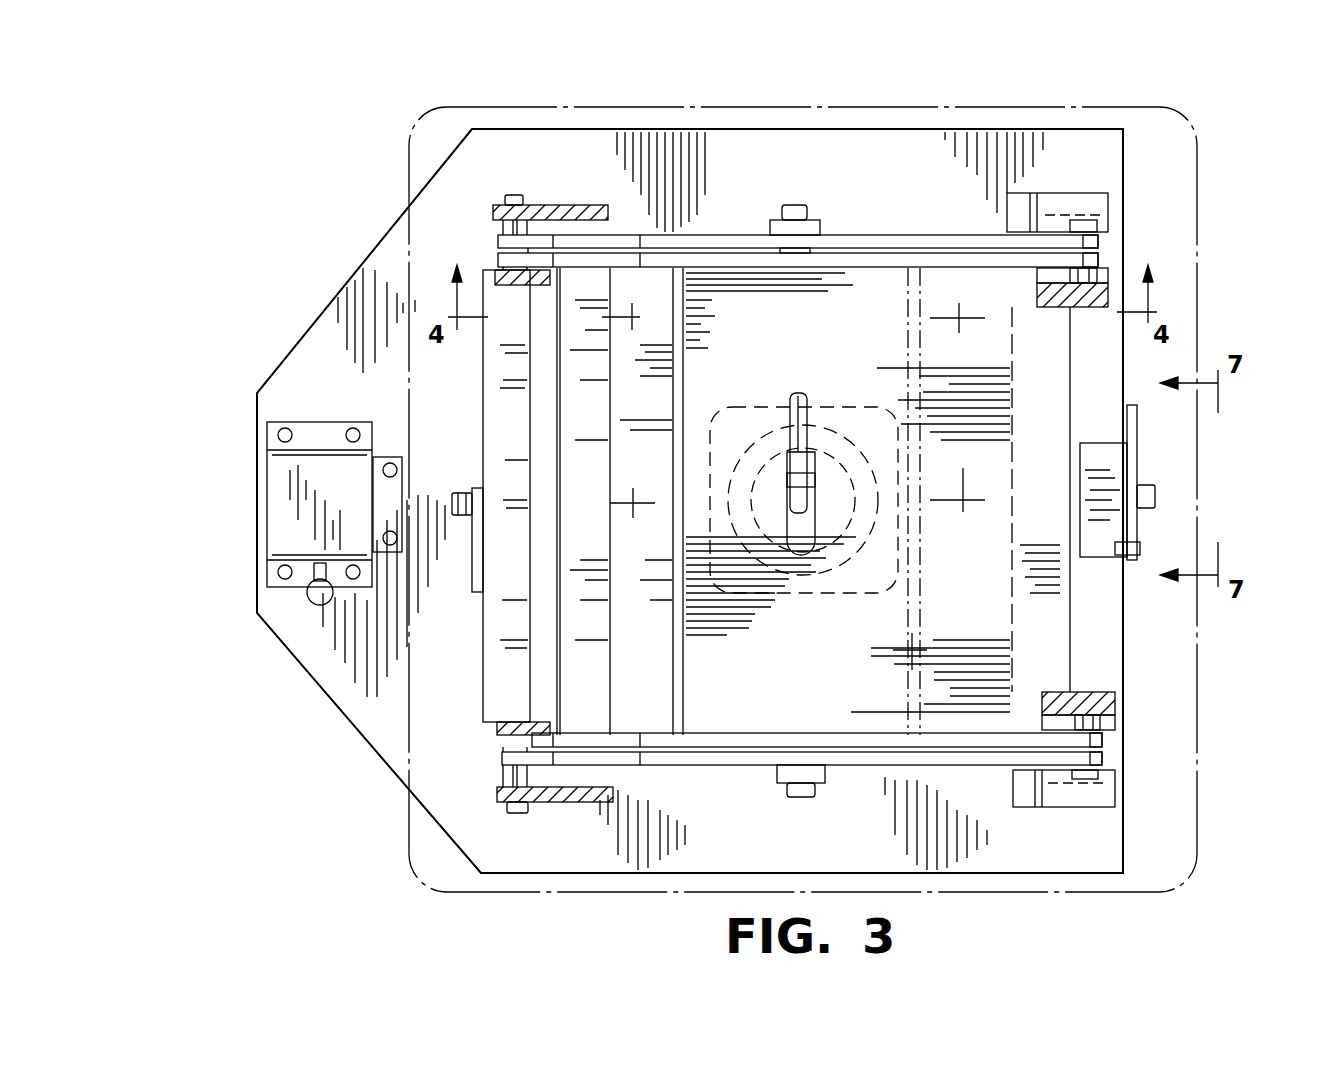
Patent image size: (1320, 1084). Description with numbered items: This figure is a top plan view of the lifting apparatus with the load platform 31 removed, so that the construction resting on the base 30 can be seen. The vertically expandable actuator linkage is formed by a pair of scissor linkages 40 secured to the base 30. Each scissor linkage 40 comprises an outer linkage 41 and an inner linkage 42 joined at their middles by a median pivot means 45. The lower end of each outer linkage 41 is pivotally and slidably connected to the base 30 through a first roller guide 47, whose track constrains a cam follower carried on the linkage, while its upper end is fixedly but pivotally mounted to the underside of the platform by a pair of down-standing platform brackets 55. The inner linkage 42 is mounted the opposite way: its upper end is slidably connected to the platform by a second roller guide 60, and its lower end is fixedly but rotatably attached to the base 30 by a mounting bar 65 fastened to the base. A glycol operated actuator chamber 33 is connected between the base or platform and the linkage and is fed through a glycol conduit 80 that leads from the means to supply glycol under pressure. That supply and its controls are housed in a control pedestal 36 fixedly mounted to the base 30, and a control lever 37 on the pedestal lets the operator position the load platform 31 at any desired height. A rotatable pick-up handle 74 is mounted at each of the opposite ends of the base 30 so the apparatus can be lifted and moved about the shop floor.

The base 30 is at (440, 793).
The load platform 31 is at (1197, 211).
The glycol operated actuator chamber 33 is at (833, 552).
The control pedestal 36 is at (267, 492).
The control lever 37 is at (315, 605).
The scissor linkage 40 is at (860, 230).
The outer linkage 41 is at (960, 242).
The inner linkage 42 is at (900, 265).
The median pivot means 45 is at (762, 206).
The first roller guide 47 is at (1050, 203).
The platform bracket 55 is at (500, 275).
The second roller guide 60 is at (1047, 302).
The mounting bar 65 is at (507, 387).
The rotatable pick-up handle 74 is at (472, 567).
The glycol conduit 80 is at (797, 393).